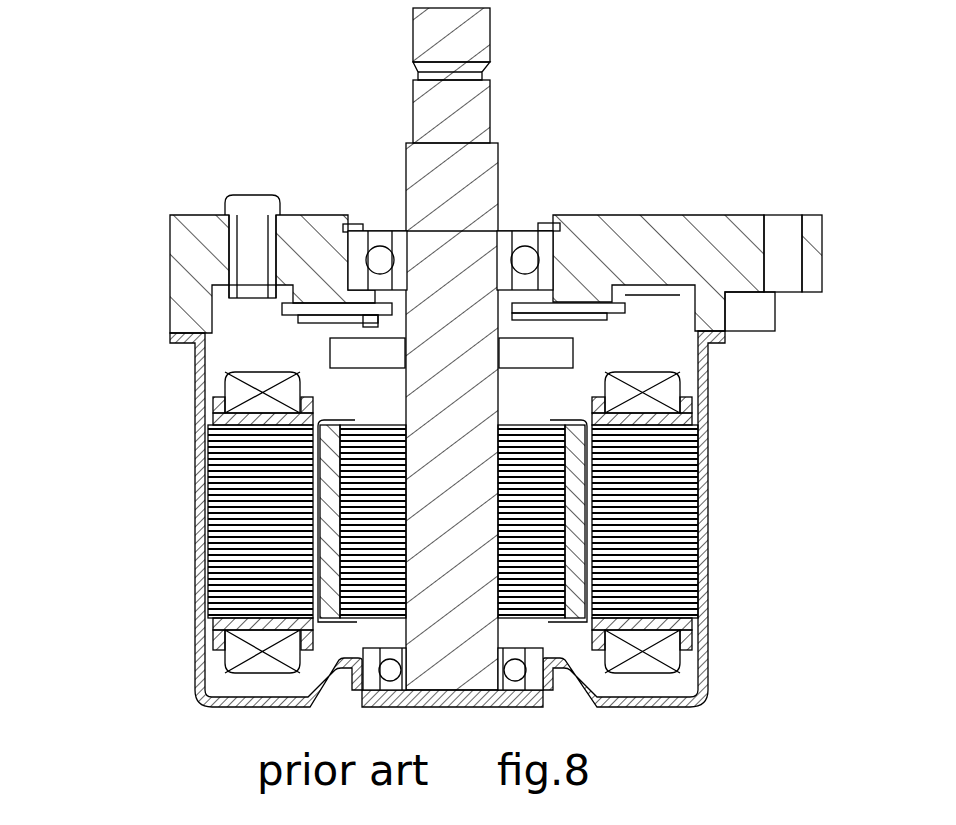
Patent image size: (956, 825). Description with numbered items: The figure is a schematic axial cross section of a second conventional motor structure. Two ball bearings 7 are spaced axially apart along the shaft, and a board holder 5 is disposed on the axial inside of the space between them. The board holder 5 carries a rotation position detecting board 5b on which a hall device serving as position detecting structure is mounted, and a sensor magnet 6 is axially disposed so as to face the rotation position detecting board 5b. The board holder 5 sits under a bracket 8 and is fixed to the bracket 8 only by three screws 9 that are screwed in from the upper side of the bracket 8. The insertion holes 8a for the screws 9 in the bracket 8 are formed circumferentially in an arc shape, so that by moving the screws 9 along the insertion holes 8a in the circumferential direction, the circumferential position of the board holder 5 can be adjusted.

The board holder 5 is at (331, 272).
The rotation position detecting board 5b is at (370, 320).
The sensor magnet 6 is at (358, 357).
The ball bearings 7 is at (513, 220).
The bracket 8 is at (445, 225).
The insertion holes 8a is at (227, 265).
The screws 9 is at (258, 190).